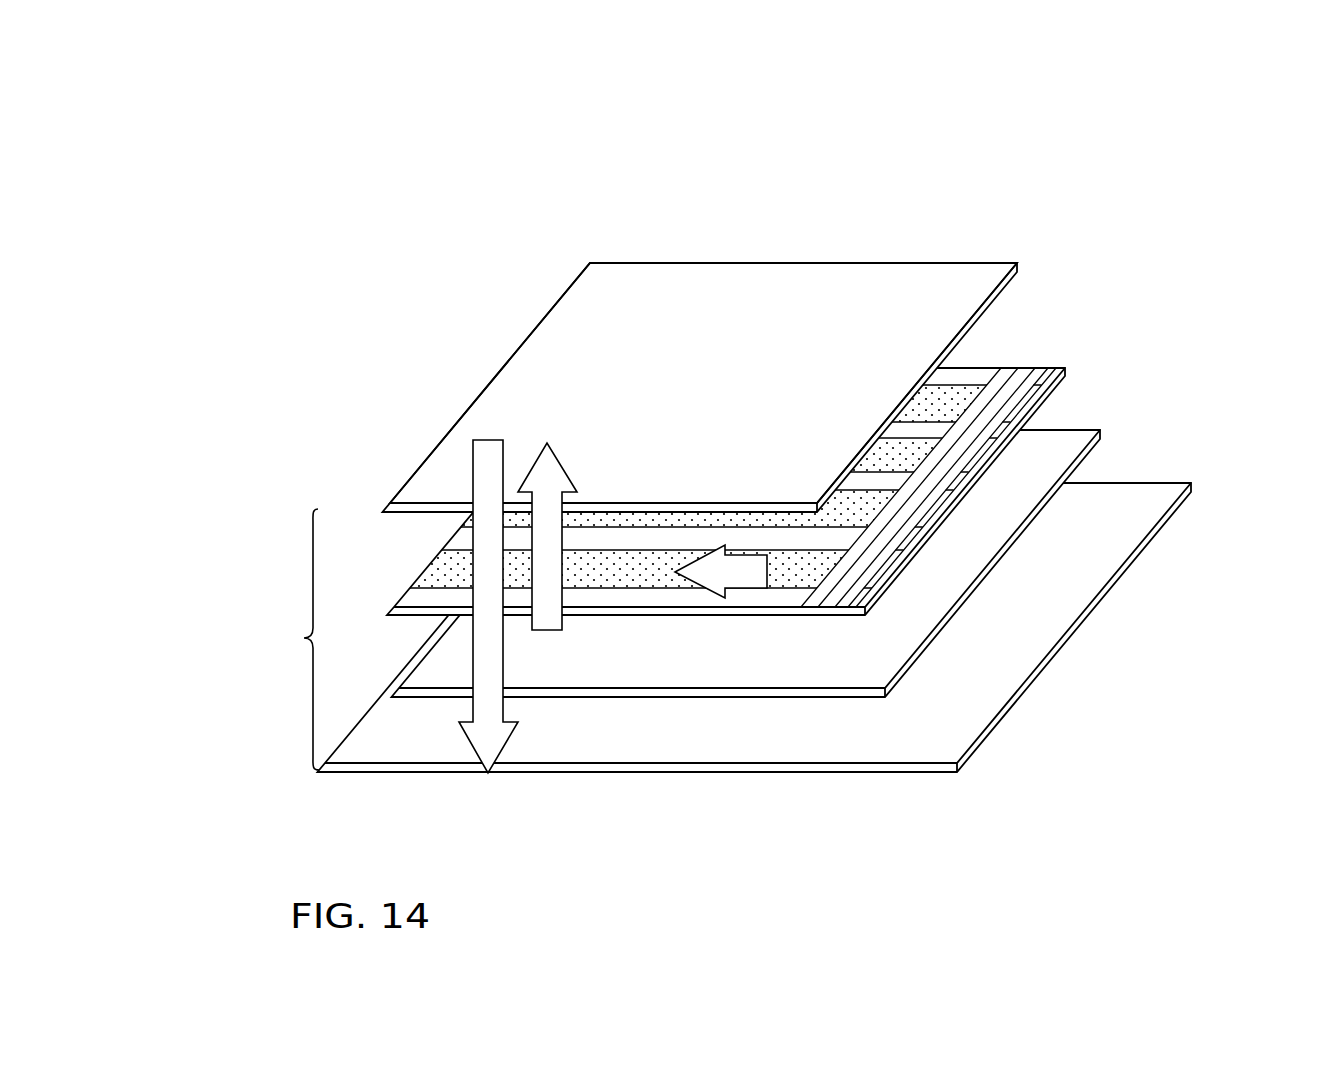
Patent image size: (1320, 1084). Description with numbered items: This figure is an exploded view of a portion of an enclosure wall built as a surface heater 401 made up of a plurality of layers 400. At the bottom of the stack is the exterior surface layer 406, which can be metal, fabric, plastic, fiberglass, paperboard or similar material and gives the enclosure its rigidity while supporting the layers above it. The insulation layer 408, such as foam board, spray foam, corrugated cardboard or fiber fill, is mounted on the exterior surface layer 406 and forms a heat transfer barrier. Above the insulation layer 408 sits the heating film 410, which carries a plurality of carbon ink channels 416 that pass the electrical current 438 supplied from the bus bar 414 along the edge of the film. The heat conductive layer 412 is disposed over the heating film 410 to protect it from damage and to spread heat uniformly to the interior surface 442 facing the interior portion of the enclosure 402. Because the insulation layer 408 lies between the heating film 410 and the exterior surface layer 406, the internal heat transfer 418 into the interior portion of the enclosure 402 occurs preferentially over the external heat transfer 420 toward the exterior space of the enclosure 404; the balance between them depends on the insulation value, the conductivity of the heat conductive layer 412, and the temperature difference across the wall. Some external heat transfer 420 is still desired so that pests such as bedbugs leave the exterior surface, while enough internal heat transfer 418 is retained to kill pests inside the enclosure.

The plurality of layers 400 is at (254, 639).
The surface heater 401 is at (310, 246).
The interior portion of the enclosure 402 is at (767, 175).
The exterior space of the enclosure 404 is at (750, 901).
The exterior surface layer 406 is at (962, 773).
The insulation layer 408 is at (905, 623).
The heating film 410 is at (987, 370).
The heat conductive layer 412 is at (985, 310).
The bus bar 414 is at (1012, 385).
The carbon ink channels 416 is at (858, 500).
The internal heat transfer 418 is at (553, 475).
The external heat transfer 420 is at (483, 573).
The electrical current 438 is at (782, 631).
The interior surface 442 is at (647, 310).